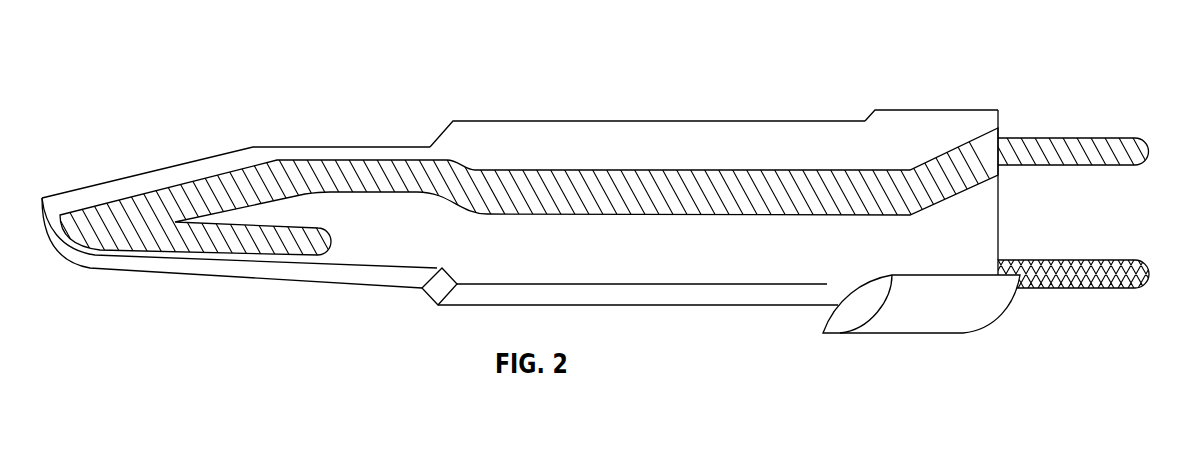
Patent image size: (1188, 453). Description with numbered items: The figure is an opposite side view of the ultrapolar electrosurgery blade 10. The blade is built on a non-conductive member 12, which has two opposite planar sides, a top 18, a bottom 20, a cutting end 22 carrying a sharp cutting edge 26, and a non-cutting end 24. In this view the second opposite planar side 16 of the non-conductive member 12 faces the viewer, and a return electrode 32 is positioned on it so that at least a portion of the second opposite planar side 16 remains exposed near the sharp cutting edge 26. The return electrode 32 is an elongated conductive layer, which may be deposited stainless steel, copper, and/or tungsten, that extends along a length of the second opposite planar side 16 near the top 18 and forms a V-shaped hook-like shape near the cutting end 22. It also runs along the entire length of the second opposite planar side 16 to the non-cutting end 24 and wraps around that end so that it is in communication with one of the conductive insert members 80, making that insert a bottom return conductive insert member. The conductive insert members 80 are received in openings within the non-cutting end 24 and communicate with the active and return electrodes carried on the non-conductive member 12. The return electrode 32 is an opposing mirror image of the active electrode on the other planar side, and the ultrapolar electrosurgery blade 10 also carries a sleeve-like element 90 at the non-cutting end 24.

The ultrapolar electrosurgery blade 10 is at (834, 60).
The non-conductive member 12 is at (495, 146).
The second opposite planar side 16 is at (641, 248).
The top 18 is at (691, 295).
The bottom 20 is at (750, 120).
The cutting end 22 is at (38, 196).
The non-cutting end 24 is at (1000, 209).
The sharp cutting edge 26 is at (134, 174).
The return electrode 32 is at (220, 187).
The conductive insert members 80 is at (1072, 137).
The sleeve 90 is at (918, 313).